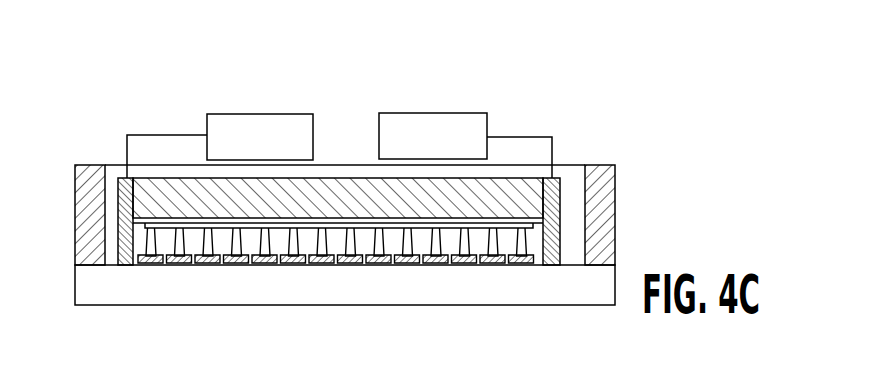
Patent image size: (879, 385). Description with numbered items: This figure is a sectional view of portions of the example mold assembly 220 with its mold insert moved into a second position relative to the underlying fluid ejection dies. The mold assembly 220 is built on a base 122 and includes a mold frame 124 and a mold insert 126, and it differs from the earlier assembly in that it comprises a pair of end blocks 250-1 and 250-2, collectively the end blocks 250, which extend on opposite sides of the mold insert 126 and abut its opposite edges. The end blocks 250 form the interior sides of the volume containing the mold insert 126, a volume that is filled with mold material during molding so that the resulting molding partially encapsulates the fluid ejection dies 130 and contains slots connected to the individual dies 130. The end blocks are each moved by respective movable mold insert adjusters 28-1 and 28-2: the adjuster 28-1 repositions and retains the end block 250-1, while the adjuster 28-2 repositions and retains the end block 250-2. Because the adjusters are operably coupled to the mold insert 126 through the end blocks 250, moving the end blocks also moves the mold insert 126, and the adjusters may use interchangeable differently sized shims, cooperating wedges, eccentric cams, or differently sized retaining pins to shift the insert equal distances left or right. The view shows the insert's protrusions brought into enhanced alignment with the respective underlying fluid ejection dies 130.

The mold assembly 220 is at (418, 78).
The mold frame 124 is at (85, 165).
The base 122 is at (86, 283).
The mold insert 126 is at (363, 185).
The fluid ejection dies 130 is at (251, 266).
The end blocks 250 is at (552, 265).
The end block 250-1 is at (122, 180).
The end block 250-2 is at (563, 181).
The movable mold insert adjuster 28-1 is at (252, 113).
The movable mold insert adjuster 28-2 is at (447, 113).